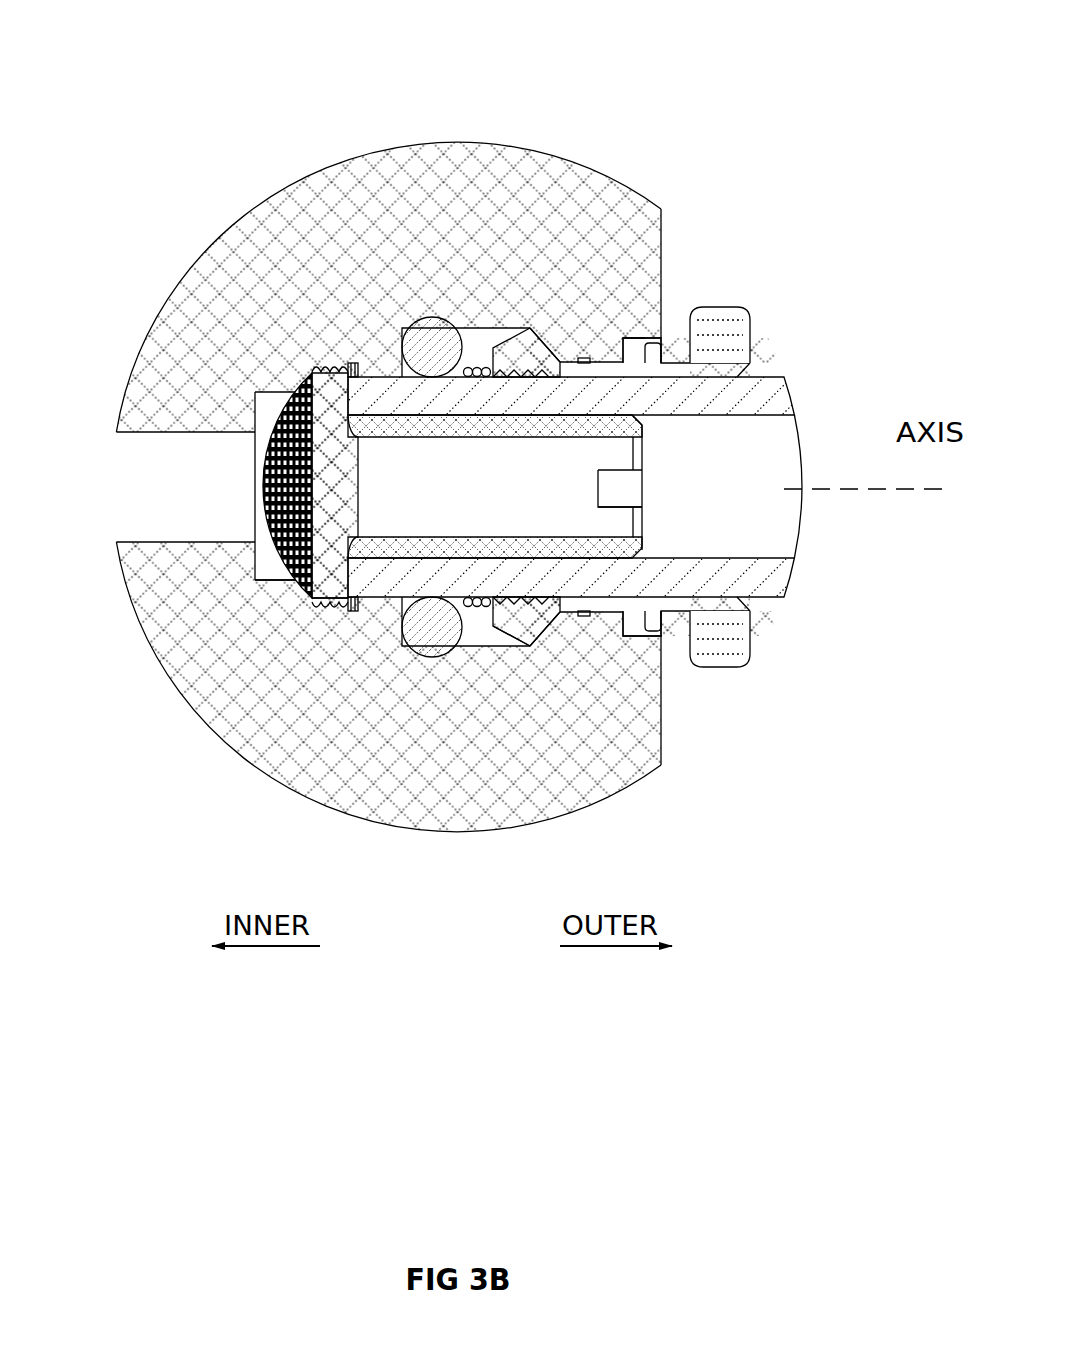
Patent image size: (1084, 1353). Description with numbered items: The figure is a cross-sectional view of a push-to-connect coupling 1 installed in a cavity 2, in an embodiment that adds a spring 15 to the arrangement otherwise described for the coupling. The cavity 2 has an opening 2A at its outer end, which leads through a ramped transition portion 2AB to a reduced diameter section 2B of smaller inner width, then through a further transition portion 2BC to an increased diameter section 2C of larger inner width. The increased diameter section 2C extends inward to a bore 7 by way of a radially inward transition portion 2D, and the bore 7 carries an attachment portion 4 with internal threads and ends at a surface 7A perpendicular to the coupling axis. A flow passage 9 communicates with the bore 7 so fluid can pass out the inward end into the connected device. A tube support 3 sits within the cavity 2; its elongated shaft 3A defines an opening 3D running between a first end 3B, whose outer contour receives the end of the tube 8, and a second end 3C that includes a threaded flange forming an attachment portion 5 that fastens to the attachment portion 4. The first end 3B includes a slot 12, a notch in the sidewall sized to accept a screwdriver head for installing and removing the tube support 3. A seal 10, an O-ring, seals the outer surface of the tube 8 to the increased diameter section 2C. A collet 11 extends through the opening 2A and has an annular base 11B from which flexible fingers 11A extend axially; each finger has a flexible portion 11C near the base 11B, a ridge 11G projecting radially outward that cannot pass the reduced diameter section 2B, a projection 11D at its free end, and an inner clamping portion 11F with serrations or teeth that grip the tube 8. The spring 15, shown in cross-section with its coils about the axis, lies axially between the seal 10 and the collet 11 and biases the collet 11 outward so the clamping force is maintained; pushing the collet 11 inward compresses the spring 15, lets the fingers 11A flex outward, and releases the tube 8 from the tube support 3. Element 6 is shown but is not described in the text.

The push-to-connect coupling 1 is at (305, 142).
The cavity 2 is at (462, 236).
The opening 2A is at (645, 635).
The transition portion 2AB is at (646, 328).
The reduced diameter section 2B is at (618, 343).
The transition portion 2BC is at (592, 350).
The increased diameter section 2C is at (437, 345).
The transition portion 2D is at (390, 342).
The tube support 3 is at (548, 478).
The shaft 3A is at (495, 487).
The first end 3B is at (651, 437).
The second end 3C is at (308, 630).
The opening 3D is at (610, 518).
The attachment portion 4 is at (307, 602).
The attachment portion 5 is at (341, 618).
The braid 6 is at (272, 462).
The bore 7 is at (308, 378).
The surface 7A is at (385, 340).
The tube 8 is at (755, 466).
The flow passage 9 is at (216, 514).
The seal 10 is at (472, 325).
The collet 11 is at (763, 624).
The fingers 11A is at (549, 352).
The annular base 11B is at (716, 338).
The flexible portion 11C is at (612, 603).
The projection 11D is at (523, 642).
The clamping portion 11F is at (511, 383).
The ridge 11G is at (656, 355).
The slot 12 is at (600, 484).
The spring 15 is at (478, 368).